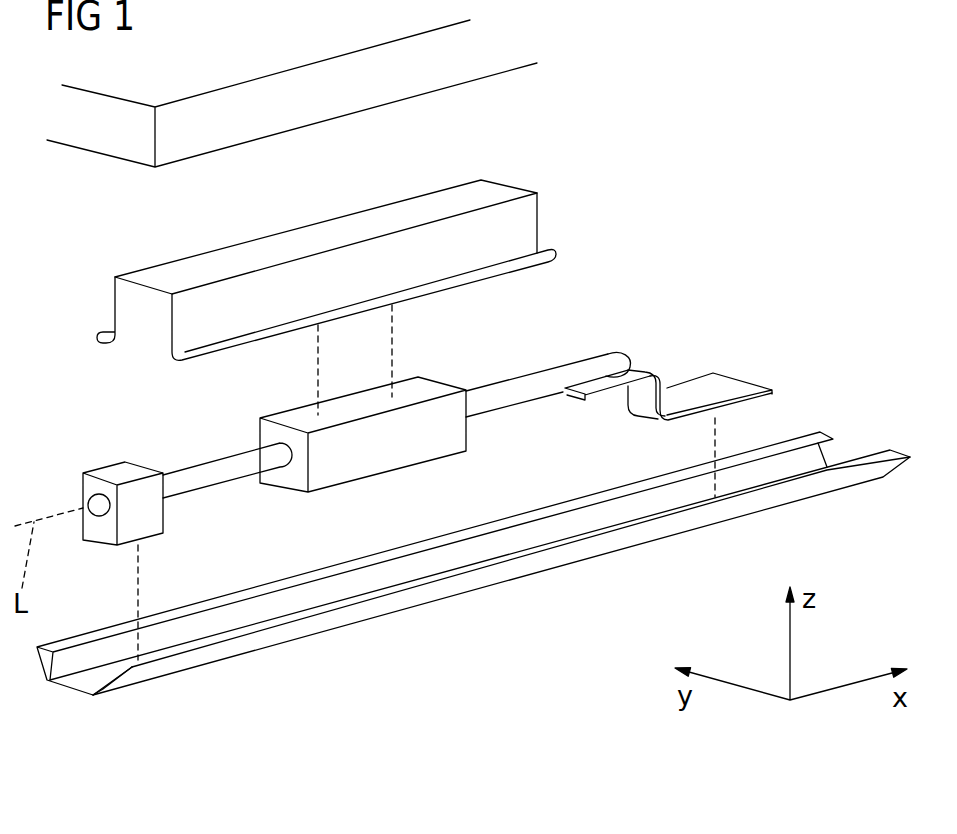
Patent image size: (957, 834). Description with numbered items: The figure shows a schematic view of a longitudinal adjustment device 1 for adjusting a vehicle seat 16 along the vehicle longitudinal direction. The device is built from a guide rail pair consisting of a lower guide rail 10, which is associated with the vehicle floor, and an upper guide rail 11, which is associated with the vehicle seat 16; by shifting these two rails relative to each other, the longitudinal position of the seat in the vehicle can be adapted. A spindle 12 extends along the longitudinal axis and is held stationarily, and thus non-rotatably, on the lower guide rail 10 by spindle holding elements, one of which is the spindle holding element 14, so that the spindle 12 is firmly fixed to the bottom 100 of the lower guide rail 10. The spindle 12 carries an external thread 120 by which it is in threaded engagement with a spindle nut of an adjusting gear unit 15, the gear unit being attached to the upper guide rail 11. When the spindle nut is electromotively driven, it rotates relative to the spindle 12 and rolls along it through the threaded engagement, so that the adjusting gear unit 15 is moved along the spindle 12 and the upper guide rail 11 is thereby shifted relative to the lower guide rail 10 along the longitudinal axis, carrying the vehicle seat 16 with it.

The longitudinal adjustment device 1 is at (598, 147).
The lower guide rail 10 is at (547, 573).
The bottom 100 is at (90, 680).
The upper guide rail 11 is at (382, 218).
The spindle 12 is at (603, 364).
The external thread 120 is at (502, 397).
The spindle holding element 14 is at (718, 387).
The adjusting gear unit 15 is at (377, 448).
The vehicle seat 16 is at (94, 182).